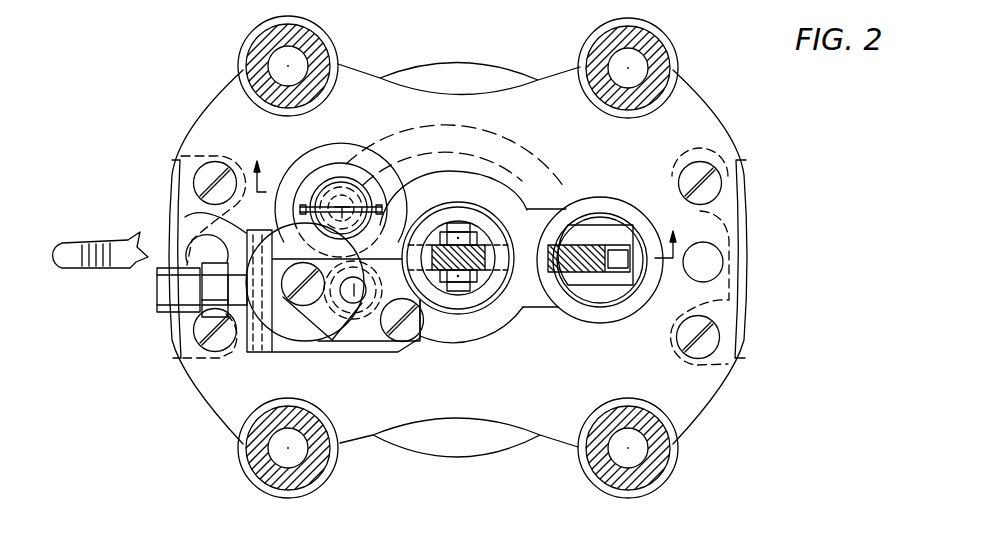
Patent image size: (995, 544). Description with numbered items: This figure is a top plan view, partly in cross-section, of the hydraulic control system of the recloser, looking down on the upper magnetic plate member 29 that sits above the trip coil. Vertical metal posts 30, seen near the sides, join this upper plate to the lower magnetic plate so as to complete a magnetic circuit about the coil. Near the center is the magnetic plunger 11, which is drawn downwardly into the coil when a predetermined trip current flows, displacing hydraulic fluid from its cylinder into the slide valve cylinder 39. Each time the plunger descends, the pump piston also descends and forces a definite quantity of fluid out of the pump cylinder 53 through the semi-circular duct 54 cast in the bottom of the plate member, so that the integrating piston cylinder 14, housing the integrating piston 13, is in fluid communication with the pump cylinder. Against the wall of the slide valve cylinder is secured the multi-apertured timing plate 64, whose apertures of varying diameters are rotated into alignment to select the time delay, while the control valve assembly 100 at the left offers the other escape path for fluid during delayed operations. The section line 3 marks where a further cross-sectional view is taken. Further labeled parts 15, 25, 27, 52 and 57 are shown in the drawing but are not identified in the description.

The magnetic plunger 11 is at (490, 230).
The integrating piston 13 is at (350, 170).
The integrating piston cylinder 14 is at (318, 168).
The indicator bar 15 is at (370, 192).
The finger 25 is at (68, 265).
The mounting bolts 27 is at (258, 53).
The upper magnetic plate member 29 is at (702, 393).
The vertical metal posts 30 is at (178, 163).
The slide valve cylinder 39 is at (335, 343).
The retaining ring 52 is at (628, 290).
The pump cylinder 53 is at (603, 307).
The semi-circular duct 54 is at (510, 157).
The second housing bore 57 is at (612, 202).
The timing plate 64 is at (207, 212).
The control valve assembly 100 is at (158, 302).
The section line 3- 3 is at (464, 196).